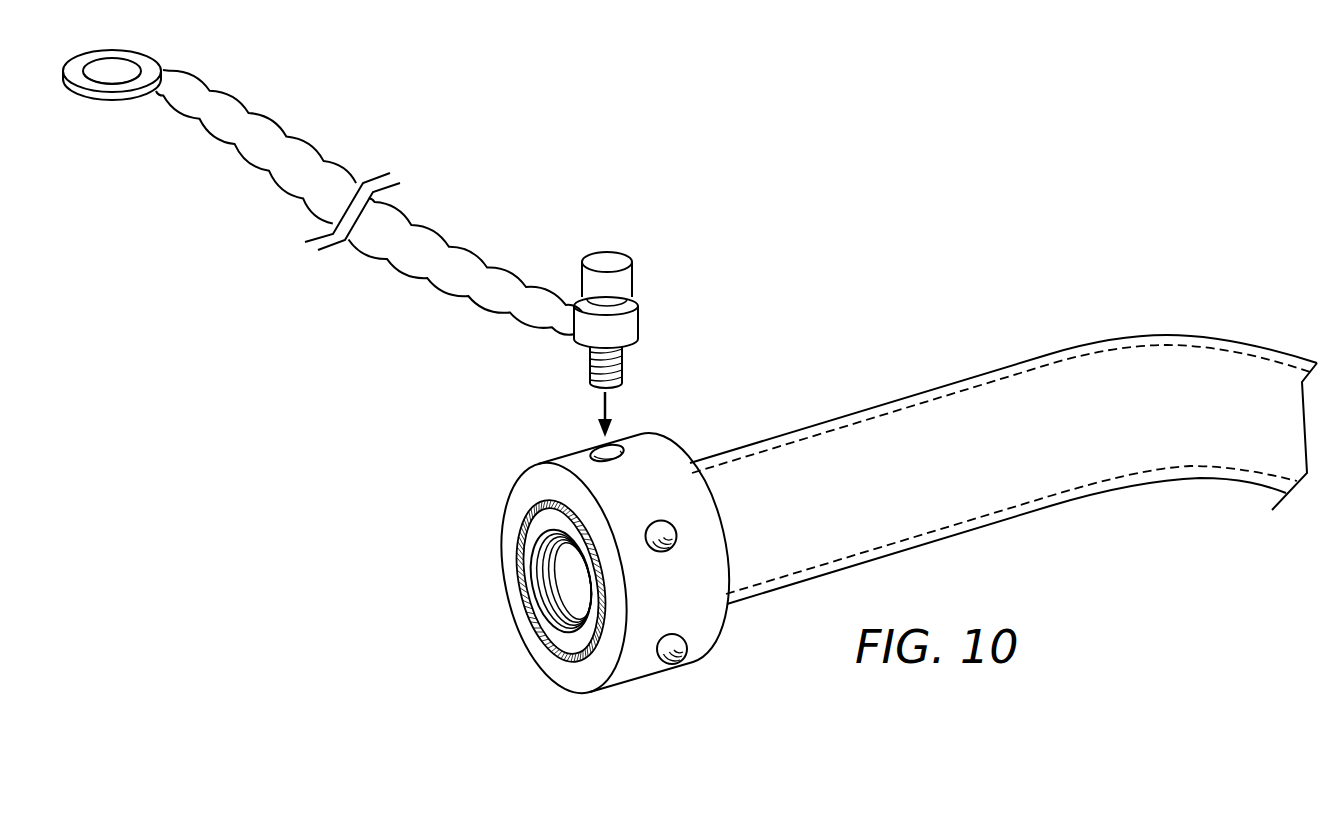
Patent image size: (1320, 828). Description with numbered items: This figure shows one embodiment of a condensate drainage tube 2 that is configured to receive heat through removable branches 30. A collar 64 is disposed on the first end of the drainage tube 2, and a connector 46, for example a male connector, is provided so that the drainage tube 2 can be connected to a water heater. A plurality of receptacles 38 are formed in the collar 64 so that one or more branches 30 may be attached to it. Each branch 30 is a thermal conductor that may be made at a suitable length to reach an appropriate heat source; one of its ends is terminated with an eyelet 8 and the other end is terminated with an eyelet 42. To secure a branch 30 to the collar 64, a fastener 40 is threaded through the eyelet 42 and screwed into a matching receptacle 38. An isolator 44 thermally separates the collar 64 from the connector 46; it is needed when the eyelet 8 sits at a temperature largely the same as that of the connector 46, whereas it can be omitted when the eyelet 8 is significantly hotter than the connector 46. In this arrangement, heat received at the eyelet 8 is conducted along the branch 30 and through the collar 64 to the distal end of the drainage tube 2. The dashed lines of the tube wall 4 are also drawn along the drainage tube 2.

The drainage tube 2 is at (802, 430).
The inner tube wall 4 is at (957, 393).
The eyelet 8 is at (143, 62).
The branch 30 is at (432, 232).
The receptacle 38 is at (598, 445).
The fastener 40 is at (613, 257).
The eyelet 42 is at (636, 324).
The isolator 44 is at (527, 507).
The connector 46 is at (537, 608).
The collar 64 is at (633, 666).